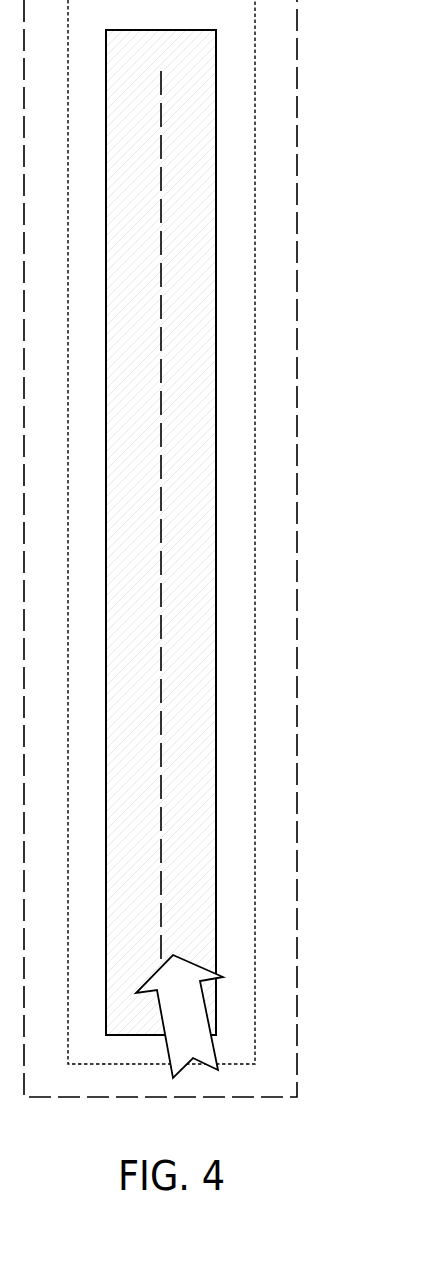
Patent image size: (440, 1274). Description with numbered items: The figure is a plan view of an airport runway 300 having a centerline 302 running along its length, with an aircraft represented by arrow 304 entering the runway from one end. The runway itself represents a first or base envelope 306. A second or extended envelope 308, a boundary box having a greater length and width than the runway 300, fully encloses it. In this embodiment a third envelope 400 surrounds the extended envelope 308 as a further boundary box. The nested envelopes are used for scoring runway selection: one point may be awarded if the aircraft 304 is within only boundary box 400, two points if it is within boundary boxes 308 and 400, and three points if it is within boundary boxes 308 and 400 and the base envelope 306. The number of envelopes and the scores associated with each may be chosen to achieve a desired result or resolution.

The airport runway 300 is at (202, 517).
The centerline 302 is at (161, 334).
The aircraft 304 is at (210, 1055).
The base envelope 306 is at (216, 85).
The extended envelope 308 is at (255, 167).
The third envelope 400 is at (297, 645).